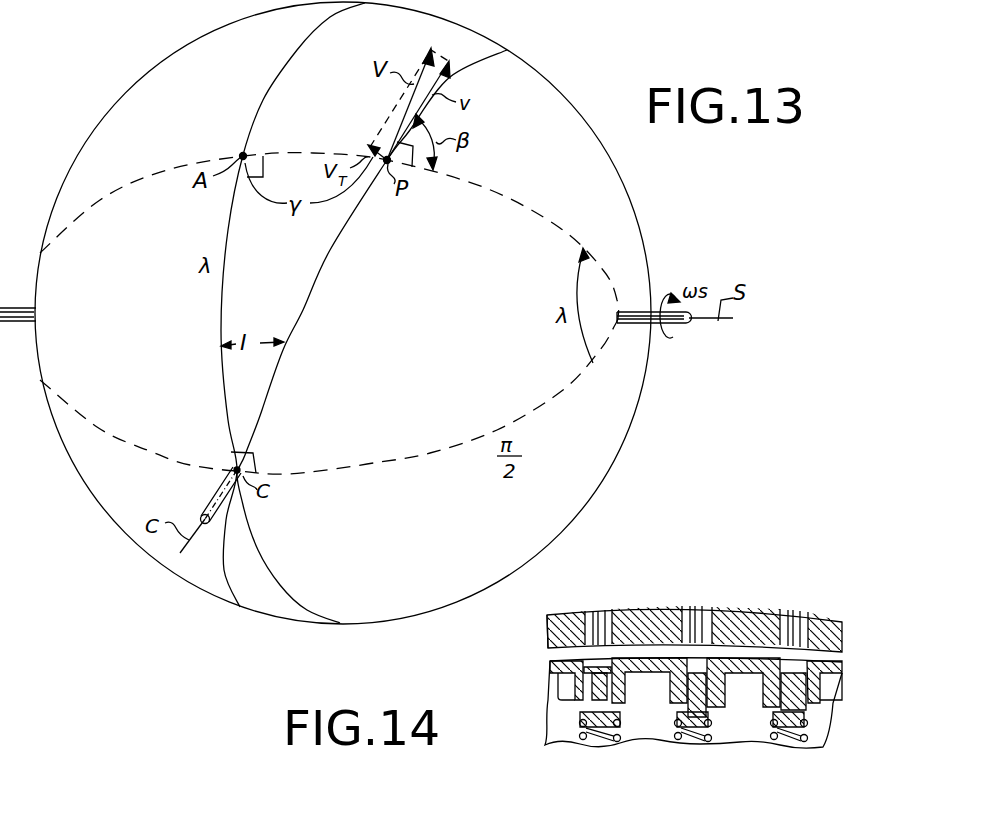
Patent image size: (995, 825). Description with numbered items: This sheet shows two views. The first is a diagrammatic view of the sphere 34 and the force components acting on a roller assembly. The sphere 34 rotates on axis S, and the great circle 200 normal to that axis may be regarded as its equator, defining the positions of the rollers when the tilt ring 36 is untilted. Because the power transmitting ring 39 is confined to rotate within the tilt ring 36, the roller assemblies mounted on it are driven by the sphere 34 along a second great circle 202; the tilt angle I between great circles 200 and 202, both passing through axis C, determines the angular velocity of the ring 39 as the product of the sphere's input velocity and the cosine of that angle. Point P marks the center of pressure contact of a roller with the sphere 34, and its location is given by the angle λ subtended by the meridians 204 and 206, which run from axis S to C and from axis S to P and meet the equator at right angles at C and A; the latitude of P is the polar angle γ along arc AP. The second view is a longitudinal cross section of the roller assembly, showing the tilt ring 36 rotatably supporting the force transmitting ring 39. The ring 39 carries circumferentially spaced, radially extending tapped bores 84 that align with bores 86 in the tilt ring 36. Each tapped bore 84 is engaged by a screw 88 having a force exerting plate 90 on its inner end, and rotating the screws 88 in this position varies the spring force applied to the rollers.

In FIG. 13, the sphere 34 is at (559, 531).
In FIG. 13, the great circle 200 is at (222, 303).
In FIG. 13, the great circle 202 is at (302, 311).
In FIG. 13, the meridian 204 is at (367, 466).
In FIG. 13, the meridian 206 is at (477, 188).
In FIG. 14, the tilt ring 36 is at (663, 608).
In FIG. 14, the bores 86 is at (603, 620).
In FIG. 14, the power transmitting ring 39 is at (550, 668).
In FIG. 14, the tapped bores 84 is at (573, 692).
In FIG. 14, the screw 88 is at (848, 708).
In FIG. 14, the force exerting plate 90 is at (620, 715).